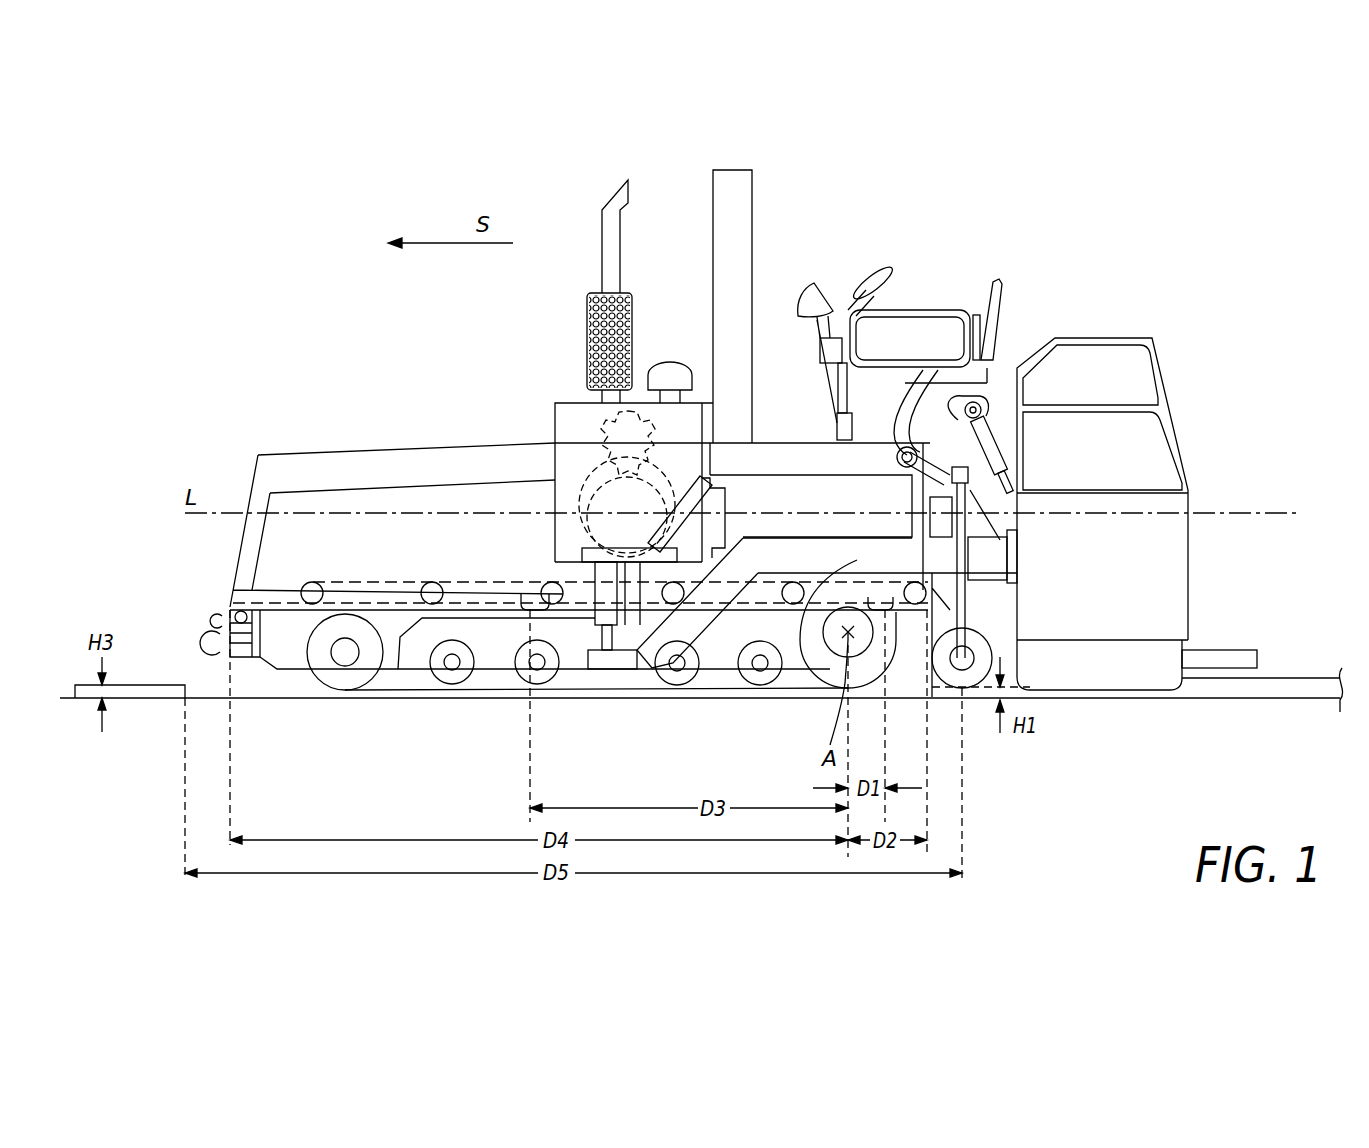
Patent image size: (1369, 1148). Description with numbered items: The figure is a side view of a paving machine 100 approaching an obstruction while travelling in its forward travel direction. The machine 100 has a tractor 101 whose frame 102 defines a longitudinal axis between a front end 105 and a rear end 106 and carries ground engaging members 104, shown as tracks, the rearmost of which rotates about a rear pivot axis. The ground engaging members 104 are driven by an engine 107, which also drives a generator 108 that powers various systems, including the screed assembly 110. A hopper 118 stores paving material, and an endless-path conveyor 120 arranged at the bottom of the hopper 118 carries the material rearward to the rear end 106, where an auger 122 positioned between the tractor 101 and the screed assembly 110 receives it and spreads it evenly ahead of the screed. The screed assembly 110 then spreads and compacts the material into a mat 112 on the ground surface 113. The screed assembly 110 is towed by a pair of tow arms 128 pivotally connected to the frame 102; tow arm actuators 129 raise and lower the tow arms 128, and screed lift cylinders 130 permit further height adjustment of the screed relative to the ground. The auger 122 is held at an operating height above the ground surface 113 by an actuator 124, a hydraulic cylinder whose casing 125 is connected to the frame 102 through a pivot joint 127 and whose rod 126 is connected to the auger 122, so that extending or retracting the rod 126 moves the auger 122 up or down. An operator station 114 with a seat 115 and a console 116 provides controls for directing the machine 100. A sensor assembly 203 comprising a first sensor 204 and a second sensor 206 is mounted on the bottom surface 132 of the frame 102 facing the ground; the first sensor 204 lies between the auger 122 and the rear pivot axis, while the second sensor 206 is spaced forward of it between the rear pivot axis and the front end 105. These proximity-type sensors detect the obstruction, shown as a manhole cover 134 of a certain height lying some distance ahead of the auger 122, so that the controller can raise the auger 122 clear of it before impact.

The paving machine 100 is at (315, 163).
The tractor 101 is at (404, 432).
The frame 102 is at (807, 442).
The ground engaging members 104 is at (308, 692).
The front end 105 is at (253, 478).
The rear end 106 is at (958, 415).
The engine 107 is at (565, 440).
The generator 108 is at (600, 498).
The screed assembly 110 is at (1193, 323).
The mat 112 is at (1312, 678).
The ground surface 113 is at (277, 698).
The operator station 114 is at (890, 243).
The seat 115 is at (997, 290).
The console 116 is at (838, 257).
The hopper 118 is at (350, 452).
The conveyors 120 is at (310, 587).
The auger 122 is at (990, 647).
The actuator 124 is at (1020, 538).
The casing 125 is at (983, 550).
The rod 126 is at (1020, 632).
The pivot joint 127 is at (907, 455).
The tow arms 128 is at (860, 660).
The tow arm actuators 129 is at (606, 617).
The screed lift cylinders 130 is at (993, 458).
The bottom surface 132 is at (800, 572).
The manhole cover 134 is at (148, 690).
The sensor assembly 203 is at (520, 618).
The first sensor 204 is at (887, 600).
The second sensor 206 is at (520, 600).